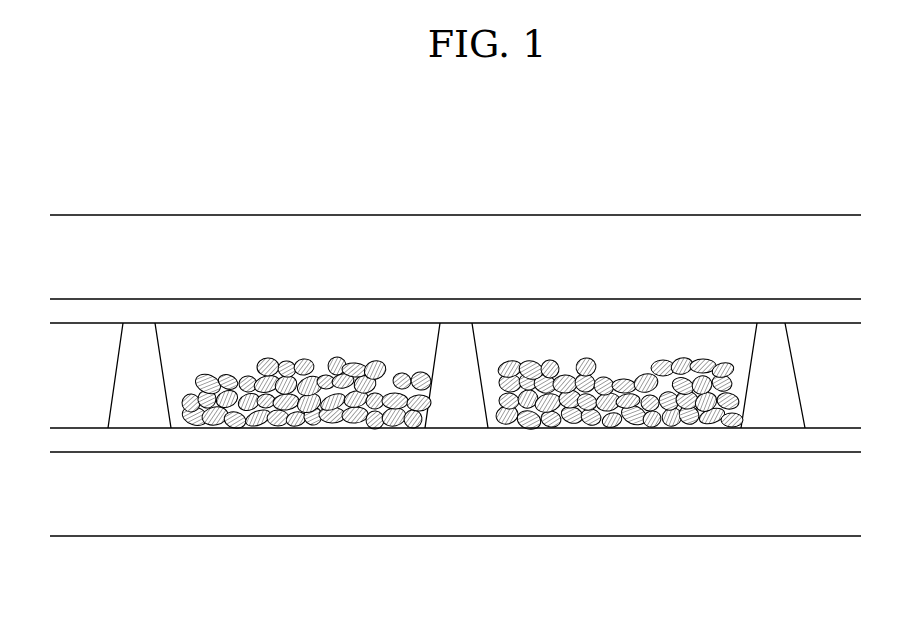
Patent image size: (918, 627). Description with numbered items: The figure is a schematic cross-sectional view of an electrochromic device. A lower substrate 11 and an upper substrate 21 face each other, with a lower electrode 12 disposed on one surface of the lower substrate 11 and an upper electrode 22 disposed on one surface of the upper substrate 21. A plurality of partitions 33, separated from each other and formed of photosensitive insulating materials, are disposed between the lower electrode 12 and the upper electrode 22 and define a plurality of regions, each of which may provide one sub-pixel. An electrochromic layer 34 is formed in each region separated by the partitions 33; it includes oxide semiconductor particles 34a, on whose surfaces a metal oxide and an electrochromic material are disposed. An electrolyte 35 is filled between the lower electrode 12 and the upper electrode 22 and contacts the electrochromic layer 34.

The lower substrate 11 is at (608, 515).
The lower electrode 12 is at (466, 440).
The upper substrate 21 is at (613, 240).
The upper electrode 22 is at (458, 308).
The partitions 33 is at (142, 408).
The electrochromic layer 34 is at (829, 360).
The oxide semiconductor particles 34a is at (302, 408).
The electrolyte 35 is at (278, 338).